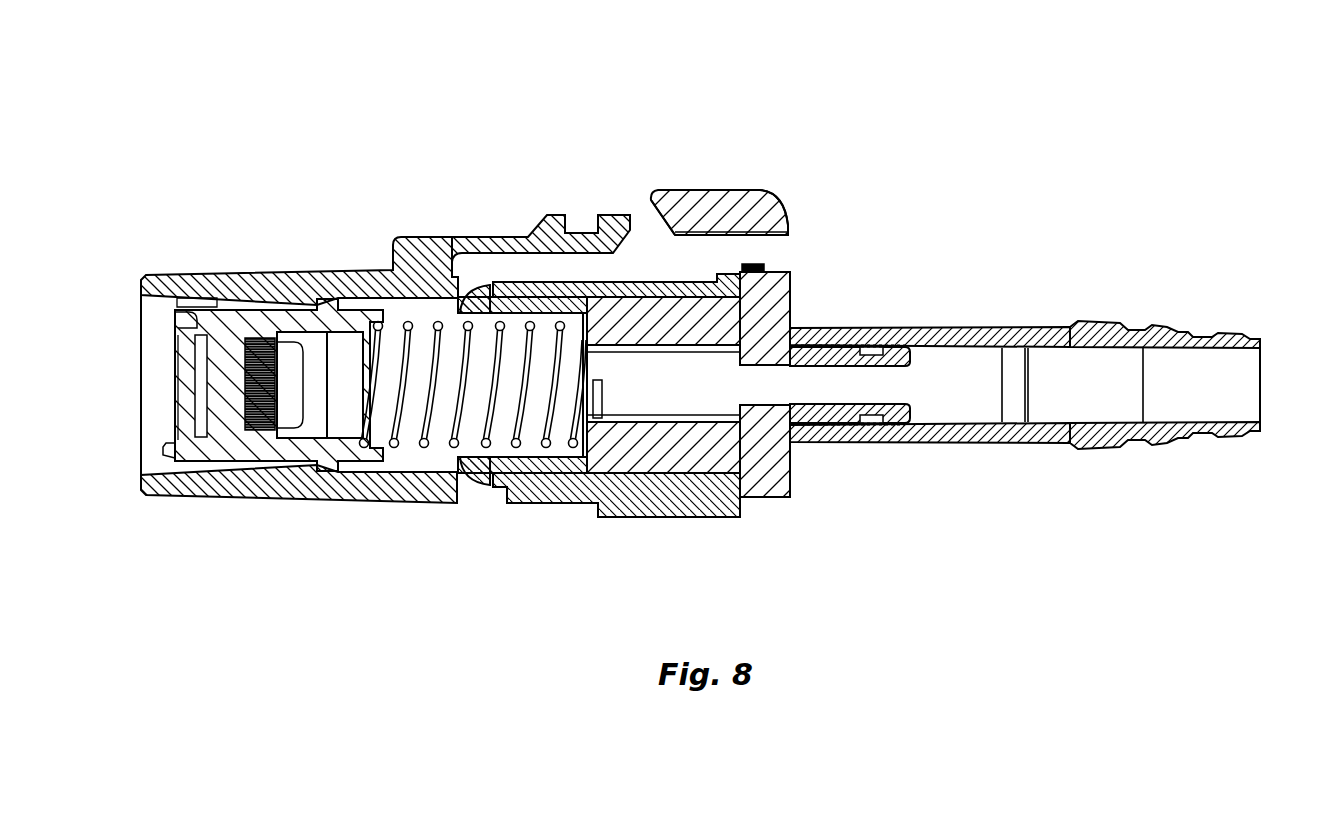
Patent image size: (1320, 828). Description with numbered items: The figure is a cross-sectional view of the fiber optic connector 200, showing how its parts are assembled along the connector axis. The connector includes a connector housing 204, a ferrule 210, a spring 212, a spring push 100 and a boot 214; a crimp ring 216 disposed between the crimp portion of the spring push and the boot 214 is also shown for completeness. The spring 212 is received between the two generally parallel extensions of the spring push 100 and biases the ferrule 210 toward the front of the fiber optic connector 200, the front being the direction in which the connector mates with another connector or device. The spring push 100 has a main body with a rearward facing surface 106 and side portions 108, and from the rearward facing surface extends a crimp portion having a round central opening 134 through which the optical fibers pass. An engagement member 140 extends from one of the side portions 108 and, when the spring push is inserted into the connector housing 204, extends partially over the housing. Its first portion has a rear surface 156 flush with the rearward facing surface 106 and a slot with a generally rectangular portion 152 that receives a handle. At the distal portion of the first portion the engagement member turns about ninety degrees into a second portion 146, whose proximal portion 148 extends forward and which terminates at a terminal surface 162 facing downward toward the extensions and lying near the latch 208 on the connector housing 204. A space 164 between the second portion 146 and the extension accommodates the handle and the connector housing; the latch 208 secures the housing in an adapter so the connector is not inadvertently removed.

The spring push 100 is at (780, 305).
The rearward facing surface 106 is at (790, 318).
The side portions 108 is at (772, 498).
The central opening 134 is at (780, 387).
The engagement member 140 is at (736, 152).
The second portion 146 is at (671, 189).
The proximal portion 148 is at (765, 190).
The portion of the slot 152 is at (770, 250).
The rear surface 156 is at (790, 277).
The terminal surface 162 is at (651, 203).
The space 164 is at (687, 246).
The fiber optic connector 200 is at (888, 153).
The connector housing 204 is at (286, 270).
The latch 208 is at (503, 235).
The ferrule 210 is at (238, 448).
The spring 212 is at (410, 452).
The boot 214 is at (1066, 443).
The crimp ring 216 is at (958, 440).